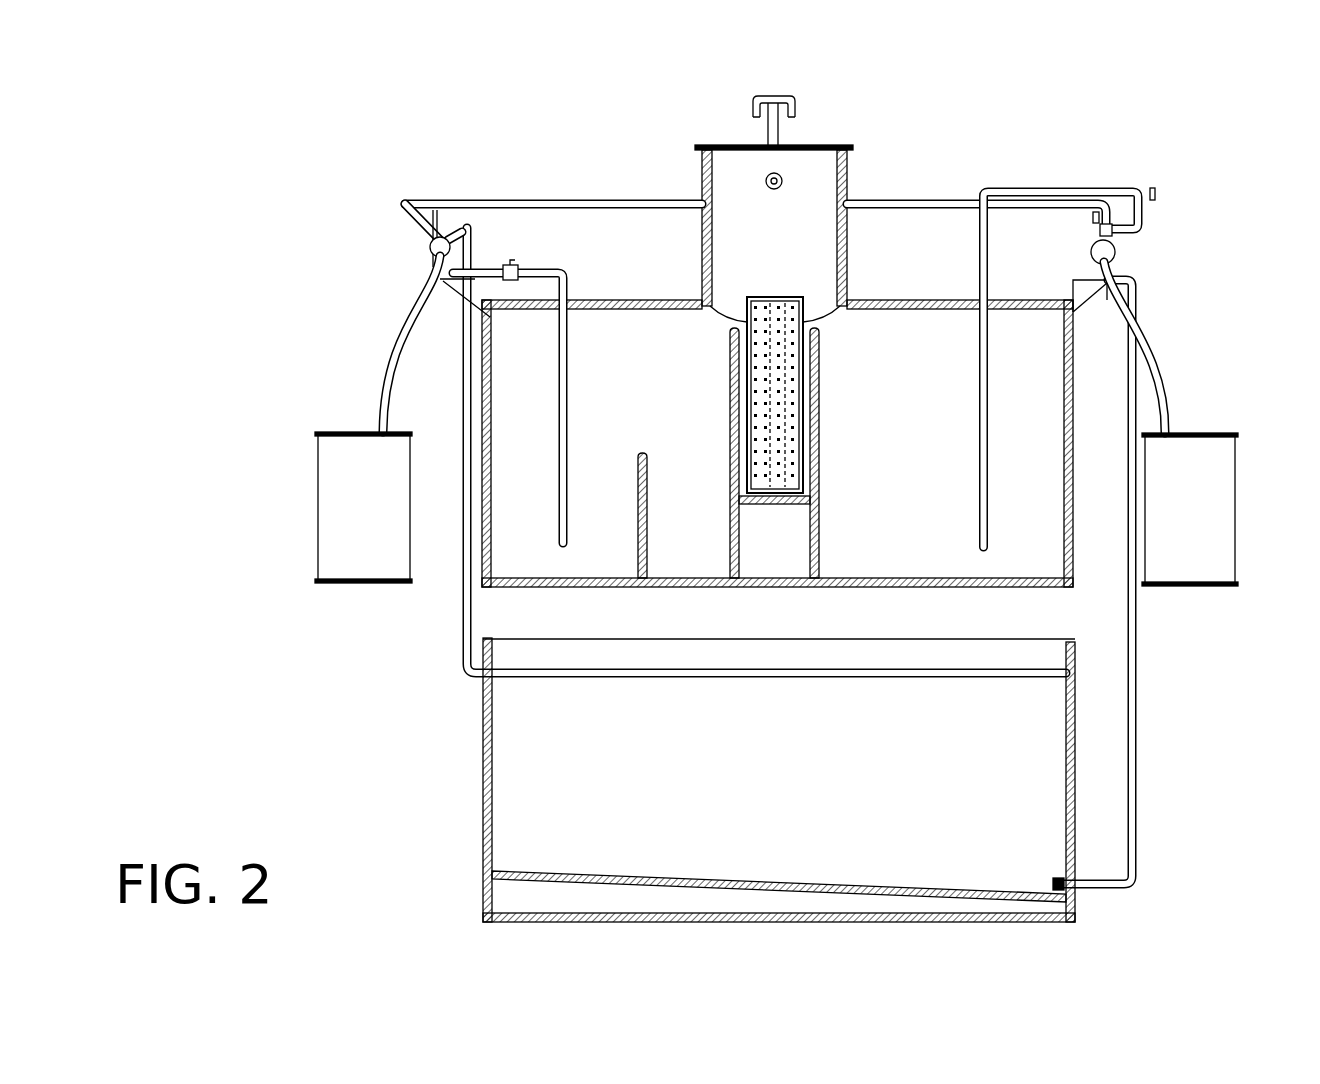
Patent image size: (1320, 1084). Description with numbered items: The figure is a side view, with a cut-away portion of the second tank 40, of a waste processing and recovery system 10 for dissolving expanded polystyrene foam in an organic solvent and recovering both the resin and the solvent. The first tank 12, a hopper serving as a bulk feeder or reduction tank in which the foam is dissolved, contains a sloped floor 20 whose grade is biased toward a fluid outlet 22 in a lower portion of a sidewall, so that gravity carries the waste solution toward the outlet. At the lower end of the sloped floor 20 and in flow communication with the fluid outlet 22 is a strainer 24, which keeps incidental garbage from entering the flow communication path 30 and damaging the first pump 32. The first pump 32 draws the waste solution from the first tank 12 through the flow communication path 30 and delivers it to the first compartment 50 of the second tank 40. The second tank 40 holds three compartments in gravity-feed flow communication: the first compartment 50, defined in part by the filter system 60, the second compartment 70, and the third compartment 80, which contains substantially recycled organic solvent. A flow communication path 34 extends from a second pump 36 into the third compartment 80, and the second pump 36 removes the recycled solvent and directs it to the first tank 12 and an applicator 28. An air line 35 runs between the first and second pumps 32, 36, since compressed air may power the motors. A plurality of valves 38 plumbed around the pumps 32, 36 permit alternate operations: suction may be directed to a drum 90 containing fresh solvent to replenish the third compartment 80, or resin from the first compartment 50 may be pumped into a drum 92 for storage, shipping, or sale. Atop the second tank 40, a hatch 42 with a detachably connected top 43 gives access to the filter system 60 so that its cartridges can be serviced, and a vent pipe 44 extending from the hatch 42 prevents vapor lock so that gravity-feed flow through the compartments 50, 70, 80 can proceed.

The waste processing and recovery system 10 is at (1135, 148).
The first tank 12 is at (452, 757).
The sloped floor 20 is at (647, 878).
The fluid outlet 22 is at (1075, 892).
The strainer 24 is at (1052, 879).
The applicator 28 is at (775, 679).
The flow communication path 30 is at (990, 470).
The first pump 32 is at (1125, 250).
The flow communication path 34 is at (462, 418).
The air line 35 is at (522, 200).
The second pump 36 is at (430, 255).
The valves 38 is at (445, 225).
The second tank 40 is at (920, 295).
The hatch 42 is at (847, 190).
The top 43 is at (732, 141).
The vent pipe 44 is at (796, 108).
The first compartment 50 is at (918, 545).
The filter system 60 is at (826, 401).
The second compartment 70 is at (678, 557).
The third compartment 80 is at (572, 560).
The drum 90 is at (325, 508).
The drum 92 is at (1228, 470).